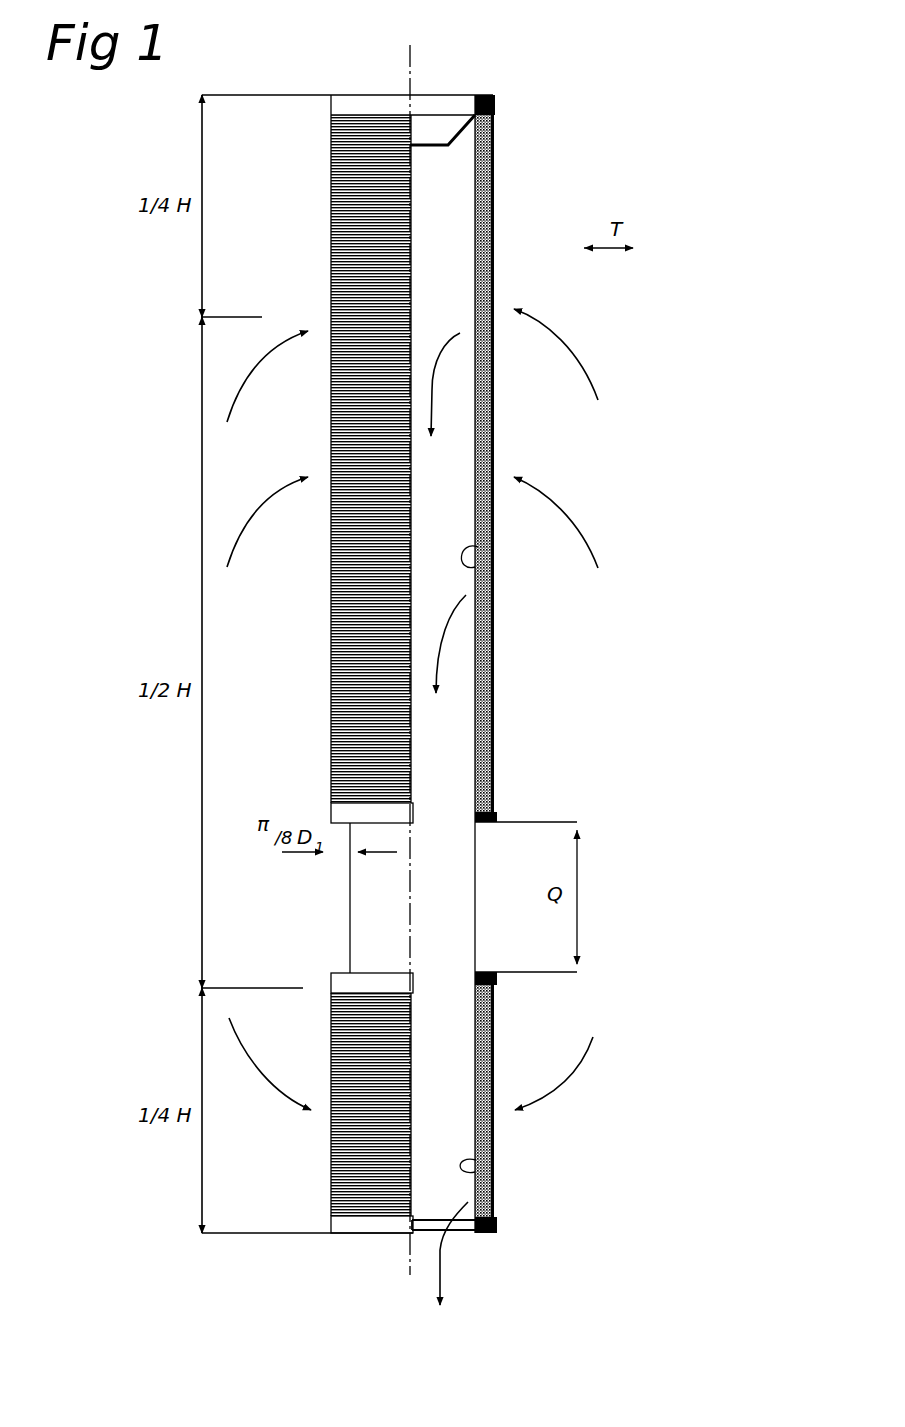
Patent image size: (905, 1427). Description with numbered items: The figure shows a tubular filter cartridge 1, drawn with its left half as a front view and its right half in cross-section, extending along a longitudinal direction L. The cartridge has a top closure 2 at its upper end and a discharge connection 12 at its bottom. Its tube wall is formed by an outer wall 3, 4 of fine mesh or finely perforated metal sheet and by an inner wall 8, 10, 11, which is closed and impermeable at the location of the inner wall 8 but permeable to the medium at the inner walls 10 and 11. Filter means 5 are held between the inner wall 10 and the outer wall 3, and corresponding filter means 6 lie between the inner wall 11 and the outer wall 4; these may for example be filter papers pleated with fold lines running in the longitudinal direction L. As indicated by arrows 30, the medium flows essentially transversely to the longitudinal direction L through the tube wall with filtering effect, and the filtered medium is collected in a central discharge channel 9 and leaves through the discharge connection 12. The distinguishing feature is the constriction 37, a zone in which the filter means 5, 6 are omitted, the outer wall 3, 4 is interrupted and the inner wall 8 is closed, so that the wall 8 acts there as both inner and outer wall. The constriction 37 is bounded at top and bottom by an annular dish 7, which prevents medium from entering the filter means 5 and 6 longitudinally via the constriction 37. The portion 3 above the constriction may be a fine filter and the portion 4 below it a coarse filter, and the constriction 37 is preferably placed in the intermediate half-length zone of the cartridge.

The filter cartridge 1 is at (455, 75).
The top closure 2 is at (458, 93).
The outer wall 3 is at (347, 204).
The outer wall 4 is at (357, 1165).
The filter means 5 is at (492, 640).
The filter means 6 is at (492, 1145).
The annular dish 7 is at (493, 815).
The inner wall 8 is at (350, 895).
The discharge channel 9 is at (452, 205).
The inner wall 10 is at (475, 567).
The inner wall 11 is at (475, 1172).
The discharge connection 12 is at (458, 1232).
The arrows 30 is at (558, 325).
The constriction 37 is at (342, 942).
The longitudinal direction L is at (410, 57).